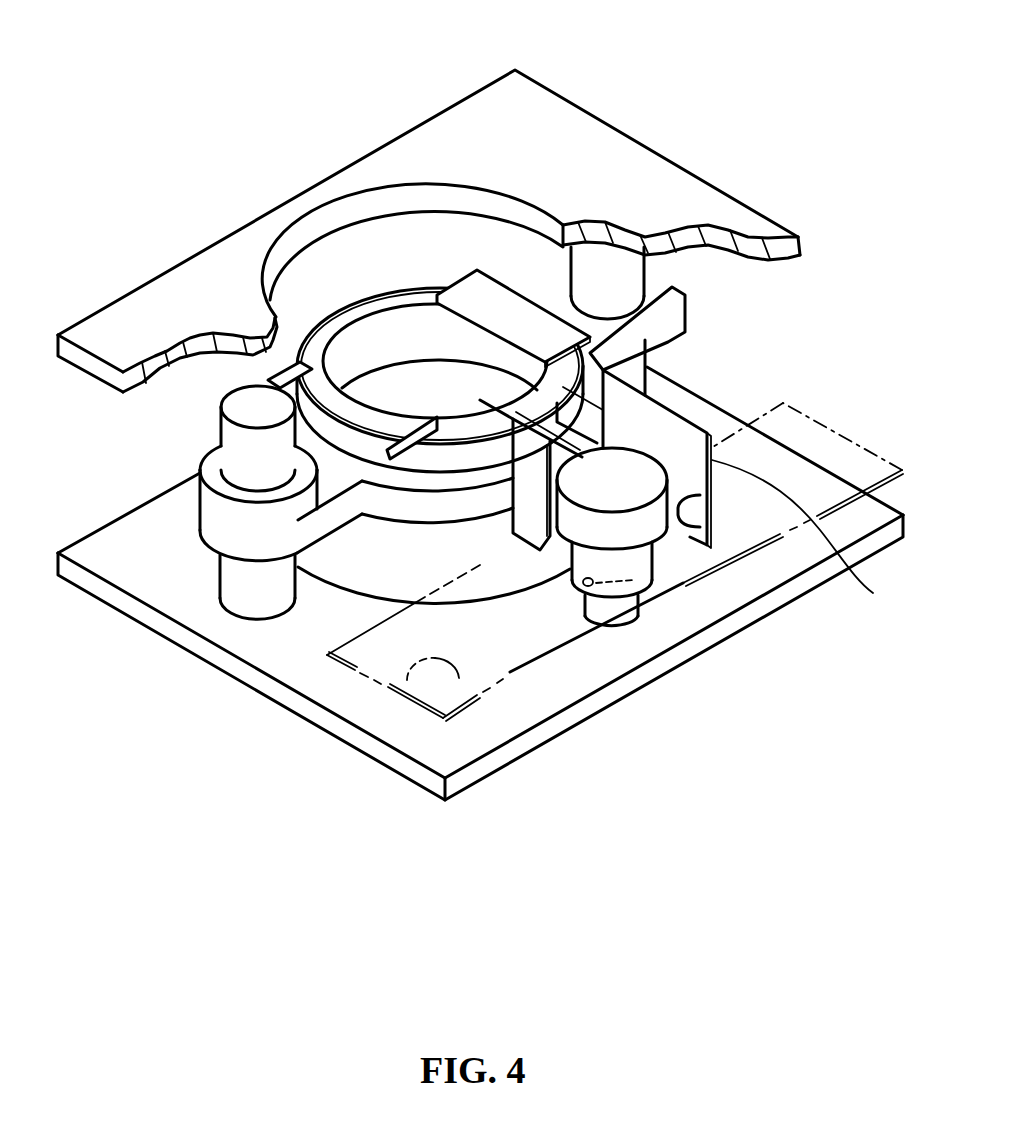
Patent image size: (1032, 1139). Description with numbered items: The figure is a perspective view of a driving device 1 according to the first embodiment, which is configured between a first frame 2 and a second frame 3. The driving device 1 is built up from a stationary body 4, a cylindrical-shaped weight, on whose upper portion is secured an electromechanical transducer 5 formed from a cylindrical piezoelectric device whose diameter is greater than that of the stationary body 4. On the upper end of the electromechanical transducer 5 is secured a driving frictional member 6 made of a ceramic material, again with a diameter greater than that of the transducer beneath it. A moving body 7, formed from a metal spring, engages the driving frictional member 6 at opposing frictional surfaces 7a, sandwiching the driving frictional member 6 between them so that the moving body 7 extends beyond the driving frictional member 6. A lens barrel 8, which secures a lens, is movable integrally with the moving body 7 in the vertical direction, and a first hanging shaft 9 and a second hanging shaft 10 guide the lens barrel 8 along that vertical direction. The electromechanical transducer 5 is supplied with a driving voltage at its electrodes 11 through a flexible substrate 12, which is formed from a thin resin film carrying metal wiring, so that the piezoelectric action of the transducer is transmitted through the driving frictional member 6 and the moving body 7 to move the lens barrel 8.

The driving device 1 is at (268, 145).
The first frame 2 is at (160, 581).
The second frame 3 is at (148, 310).
The stationary body 4 is at (642, 608).
The electromechanical transducer 5 is at (645, 565).
The driving frictional member 6 is at (665, 532).
The moving body 7 is at (592, 542).
The frictional surfaces 7a is at (833, 556).
The lens barrel 8 is at (412, 508).
The first hanging shaft 9 is at (266, 588).
The second hanging shaft 10 is at (630, 280).
The electrodes 11 is at (570, 585).
The flexible substrate 12 is at (413, 677).